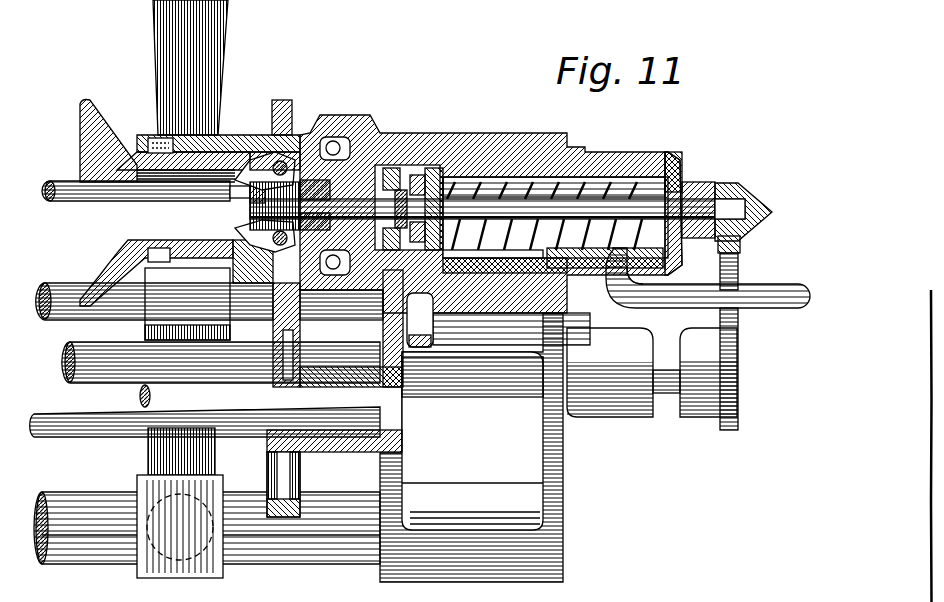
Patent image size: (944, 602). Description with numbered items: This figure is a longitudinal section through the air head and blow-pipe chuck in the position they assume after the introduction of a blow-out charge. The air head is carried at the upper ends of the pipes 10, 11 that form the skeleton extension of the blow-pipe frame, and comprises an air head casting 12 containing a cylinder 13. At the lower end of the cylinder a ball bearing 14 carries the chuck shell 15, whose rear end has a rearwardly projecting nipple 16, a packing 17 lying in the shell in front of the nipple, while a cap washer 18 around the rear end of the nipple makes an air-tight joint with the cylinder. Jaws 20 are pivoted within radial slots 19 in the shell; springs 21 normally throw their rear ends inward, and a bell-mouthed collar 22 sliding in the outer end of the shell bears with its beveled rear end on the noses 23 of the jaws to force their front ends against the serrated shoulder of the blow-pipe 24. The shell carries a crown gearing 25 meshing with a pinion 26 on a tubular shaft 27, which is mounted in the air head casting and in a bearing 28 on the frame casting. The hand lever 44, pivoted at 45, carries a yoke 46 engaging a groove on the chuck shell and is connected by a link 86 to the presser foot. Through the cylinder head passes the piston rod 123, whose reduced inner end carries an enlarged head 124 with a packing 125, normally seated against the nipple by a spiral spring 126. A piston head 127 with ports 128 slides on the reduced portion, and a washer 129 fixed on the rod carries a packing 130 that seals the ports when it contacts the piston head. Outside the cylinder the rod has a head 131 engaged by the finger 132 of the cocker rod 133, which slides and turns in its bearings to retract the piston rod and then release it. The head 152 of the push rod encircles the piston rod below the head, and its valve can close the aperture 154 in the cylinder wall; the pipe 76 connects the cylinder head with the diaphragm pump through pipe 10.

The pipe 10 is at (63, 303).
The pipe 11 is at (100, 538).
The air head casting 12 is at (415, 205).
The cylinder 13 is at (450, 198).
The ball bearing 14 is at (340, 182).
The chuck shell 15 is at (208, 150).
The nipple 16 is at (397, 200).
The packing 17 is at (310, 205).
The cap washer 18 is at (373, 200).
The radial slots 19 is at (225, 150).
The jaws 20 is at (255, 232).
The springs 21 is at (270, 200).
The collar 22 is at (113, 127).
The noses 23 is at (187, 147).
The blow-pipe 24 is at (72, 189).
The crown gearing 25 is at (287, 100).
The pinion 26 is at (267, 464).
The tubular shaft 27 is at (180, 408).
The bearing 28 is at (357, 452).
The hand lever 44 is at (190, 27).
The pivot 45 is at (170, 537).
The yoke 46 is at (197, 303).
The pipe 76 is at (781, 303).
The link 86 is at (82, 428).
The piston rod 123 is at (612, 187).
The enlarged head 124 is at (422, 200).
The packing 125 is at (432, 185).
The spiral spring 126 is at (565, 200).
The piston head 127 is at (412, 240).
The ports 128 is at (440, 195).
The washer 129 is at (470, 180).
The packing 130 is at (462, 195).
The head 131 is at (748, 197).
The finger 132 is at (737, 275).
The cocker rod 133 is at (507, 380).
The head 152 is at (703, 185).
The aperture 154 is at (670, 167).